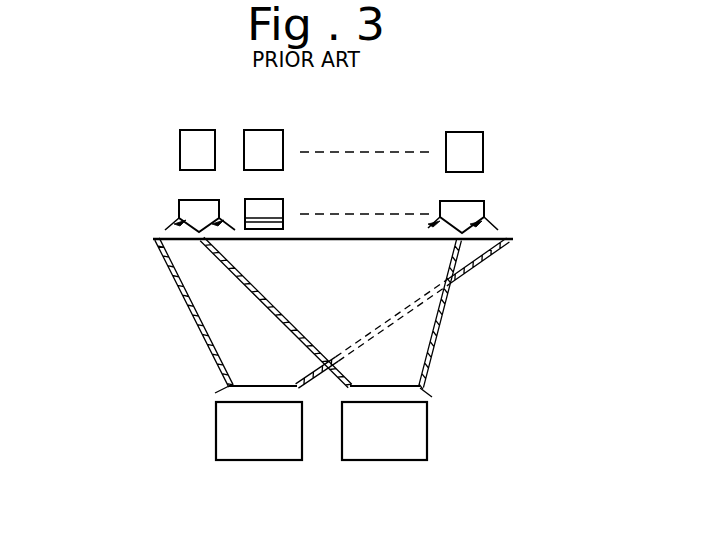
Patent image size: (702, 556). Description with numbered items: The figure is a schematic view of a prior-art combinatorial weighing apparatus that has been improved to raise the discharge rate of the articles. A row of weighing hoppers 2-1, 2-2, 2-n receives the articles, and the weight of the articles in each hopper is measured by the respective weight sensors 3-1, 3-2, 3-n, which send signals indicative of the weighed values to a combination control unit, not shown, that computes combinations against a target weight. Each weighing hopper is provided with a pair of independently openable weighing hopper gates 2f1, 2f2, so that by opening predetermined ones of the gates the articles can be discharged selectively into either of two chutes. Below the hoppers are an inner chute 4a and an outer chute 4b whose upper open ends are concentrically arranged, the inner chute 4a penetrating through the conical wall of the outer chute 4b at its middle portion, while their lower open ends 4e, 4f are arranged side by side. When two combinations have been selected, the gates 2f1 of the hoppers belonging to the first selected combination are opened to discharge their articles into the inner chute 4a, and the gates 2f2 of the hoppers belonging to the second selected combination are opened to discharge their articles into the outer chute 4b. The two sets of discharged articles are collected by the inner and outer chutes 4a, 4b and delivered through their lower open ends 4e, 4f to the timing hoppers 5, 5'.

The weight sensor 3-1 is at (186, 150).
The weight sensor 3-2 is at (248, 137).
The weight sensor 3-n is at (450, 139).
The weighing hopper 2-1 is at (183, 201).
The weighing hopper 2-2 is at (250, 200).
The weighing hopper 2-n is at (442, 203).
The weighing hopper gate 2f1 is at (228, 230).
The weighing hopper gate 2f2 is at (173, 227).
The inner chute 4a is at (448, 303).
The outer chute 4b is at (190, 312).
The lower open end 4e is at (432, 397).
The lower open end 4f is at (215, 393).
The timing hopper 5 is at (259, 462).
The timing hopper 5' is at (384, 462).